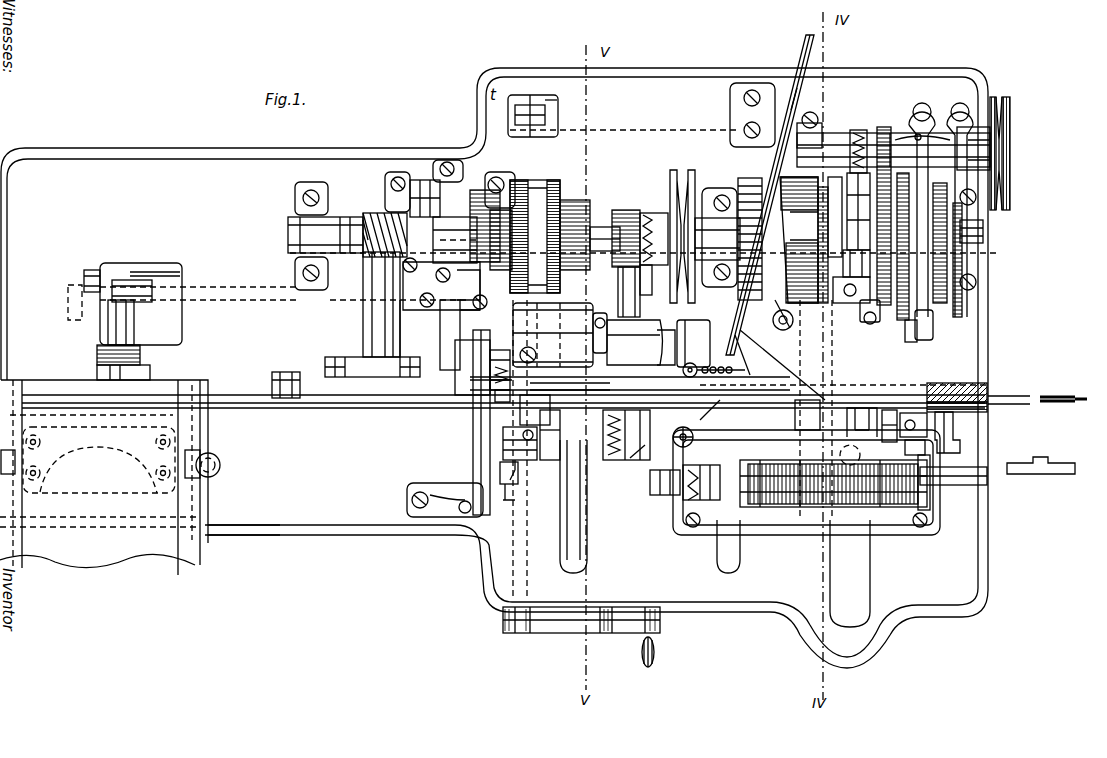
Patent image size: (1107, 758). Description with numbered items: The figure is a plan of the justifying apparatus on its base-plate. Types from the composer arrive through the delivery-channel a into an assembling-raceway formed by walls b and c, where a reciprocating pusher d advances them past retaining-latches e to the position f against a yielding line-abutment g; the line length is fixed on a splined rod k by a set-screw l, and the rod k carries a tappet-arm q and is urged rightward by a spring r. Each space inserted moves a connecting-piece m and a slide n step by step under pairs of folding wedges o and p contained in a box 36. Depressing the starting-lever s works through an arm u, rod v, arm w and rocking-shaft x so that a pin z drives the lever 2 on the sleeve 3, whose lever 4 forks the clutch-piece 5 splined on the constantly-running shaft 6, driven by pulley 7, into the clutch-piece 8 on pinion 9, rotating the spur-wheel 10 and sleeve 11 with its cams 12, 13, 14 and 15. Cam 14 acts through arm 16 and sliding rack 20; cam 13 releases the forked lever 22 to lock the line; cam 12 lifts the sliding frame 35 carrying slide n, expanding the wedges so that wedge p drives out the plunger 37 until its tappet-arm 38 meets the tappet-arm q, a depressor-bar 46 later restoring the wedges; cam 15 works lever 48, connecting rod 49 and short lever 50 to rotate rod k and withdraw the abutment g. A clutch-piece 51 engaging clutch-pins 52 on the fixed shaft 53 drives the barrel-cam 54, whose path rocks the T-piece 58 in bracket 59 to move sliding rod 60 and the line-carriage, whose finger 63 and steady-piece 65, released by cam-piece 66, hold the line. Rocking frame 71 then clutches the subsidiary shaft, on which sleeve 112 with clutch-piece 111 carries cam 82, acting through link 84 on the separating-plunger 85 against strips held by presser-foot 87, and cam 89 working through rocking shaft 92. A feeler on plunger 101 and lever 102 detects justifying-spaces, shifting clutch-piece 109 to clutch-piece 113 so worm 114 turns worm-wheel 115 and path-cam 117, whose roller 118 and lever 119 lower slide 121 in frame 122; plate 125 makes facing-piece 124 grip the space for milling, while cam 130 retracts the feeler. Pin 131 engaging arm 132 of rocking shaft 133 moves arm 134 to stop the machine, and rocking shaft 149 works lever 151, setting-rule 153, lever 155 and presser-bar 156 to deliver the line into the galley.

The lever 2 is at (804, 240).
The sleeve 3 is at (562, 440).
The second lever 4 is at (818, 120).
The clutch-piece 5 is at (858, 128).
The constantly-running shaft 6 is at (1004, 160).
The pulley 7 is at (1004, 118).
The second clutch-piece 8 is at (875, 128).
The pinion 9 is at (918, 95).
The spur-wheel 10 is at (712, 285).
The sleeve 11 is at (875, 322).
The cam 12 is at (778, 307).
The cam 13 is at (620, 222).
The cam 14 is at (660, 215).
The cam 15 is at (680, 195).
The arm 16 is at (605, 227).
The sliding rack 20 is at (842, 505).
The spring-urged forked lever 22 is at (945, 315).
The vertically-sliding frame 35 is at (700, 440).
The box 36 is at (806, 482).
The spring-urged plunger 37 is at (685, 490).
The tappet-arm 38 is at (652, 480).
The depressor-bar 46 is at (928, 500).
The lever 48 is at (960, 360).
The connecting rod 49 is at (925, 447).
The short lever 50 is at (960, 430).
The clutch-piece 51 is at (820, 300).
The clutch-pins 52 is at (856, 268).
The fixed shaft 53 is at (830, 236).
The barrel-cam 54 is at (840, 305).
The T-piece 58 is at (795, 80).
The bracket 59 is at (730, 100).
The sliding rod 60 is at (800, 92).
The spring-urged finger 63 is at (714, 370).
The steady-piece 65 is at (693, 343).
The cam-piece 66 is at (570, 383).
The rocking frame 71 is at (620, 278).
The cam 82 is at (508, 208).
The link 84 is at (553, 335).
The separating-plunger 85 is at (585, 333).
The spring-urged presser-foot 87 is at (505, 490).
The cam 89 is at (578, 198).
The rocking shaft 92 is at (570, 470).
The spring-urged plunger 101 is at (456, 290).
The lever 102 is at (445, 284).
The sliding clutch-piece 109 is at (432, 190).
The clutch-piece 111 is at (478, 250).
The sleeve 112 is at (445, 160).
The clutch-piece 113 is at (372, 262).
The worm 114 is at (375, 220).
The worm-wheel 115 is at (330, 243).
The path-cam 117 is at (362, 328).
The roller 118 is at (375, 380).
The lever 119 is at (305, 380).
The vertically-moving slide 121 is at (500, 420).
The frame 122 is at (465, 355).
The facing-piece 124 is at (535, 462).
The spring-urged plate 125 is at (500, 395).
The cam 130 is at (540, 195).
The pin 131 is at (746, 355).
The arm 132 is at (630, 379).
The spring-urged rocking shaft 133 is at (635, 342).
The arm 134 is at (664, 345).
The rocking shaft 149 is at (176, 290).
The lever 151 is at (100, 355).
The setting-rule 153 is at (52, 395).
The lever 155 is at (125, 330).
The presser-bar 156 is at (150, 372).
The delivery-channel a is at (975, 385).
The wall b is at (773, 410).
The wall c is at (845, 388).
The reciprocating pusher d is at (1050, 389).
The retaining-latches e is at (908, 410).
The position f is at (885, 405).
The line-abutment g is at (855, 400).
The splined rod k is at (716, 406).
The set-screw l is at (882, 495).
The connecting-piece m is at (1041, 455).
The slide n is at (970, 485).
The folding wedge o is at (807, 495).
The folding wedge p is at (772, 495).
The tappet-arm q is at (800, 400).
The spring r is at (615, 458).
The starting-lever s is at (588, 636).
The arm u is at (556, 128).
The rod v is at (557, 103).
The arm w is at (890, 130).
The second rocking-shaft x is at (922, 132).
The pin z is at (765, 215).